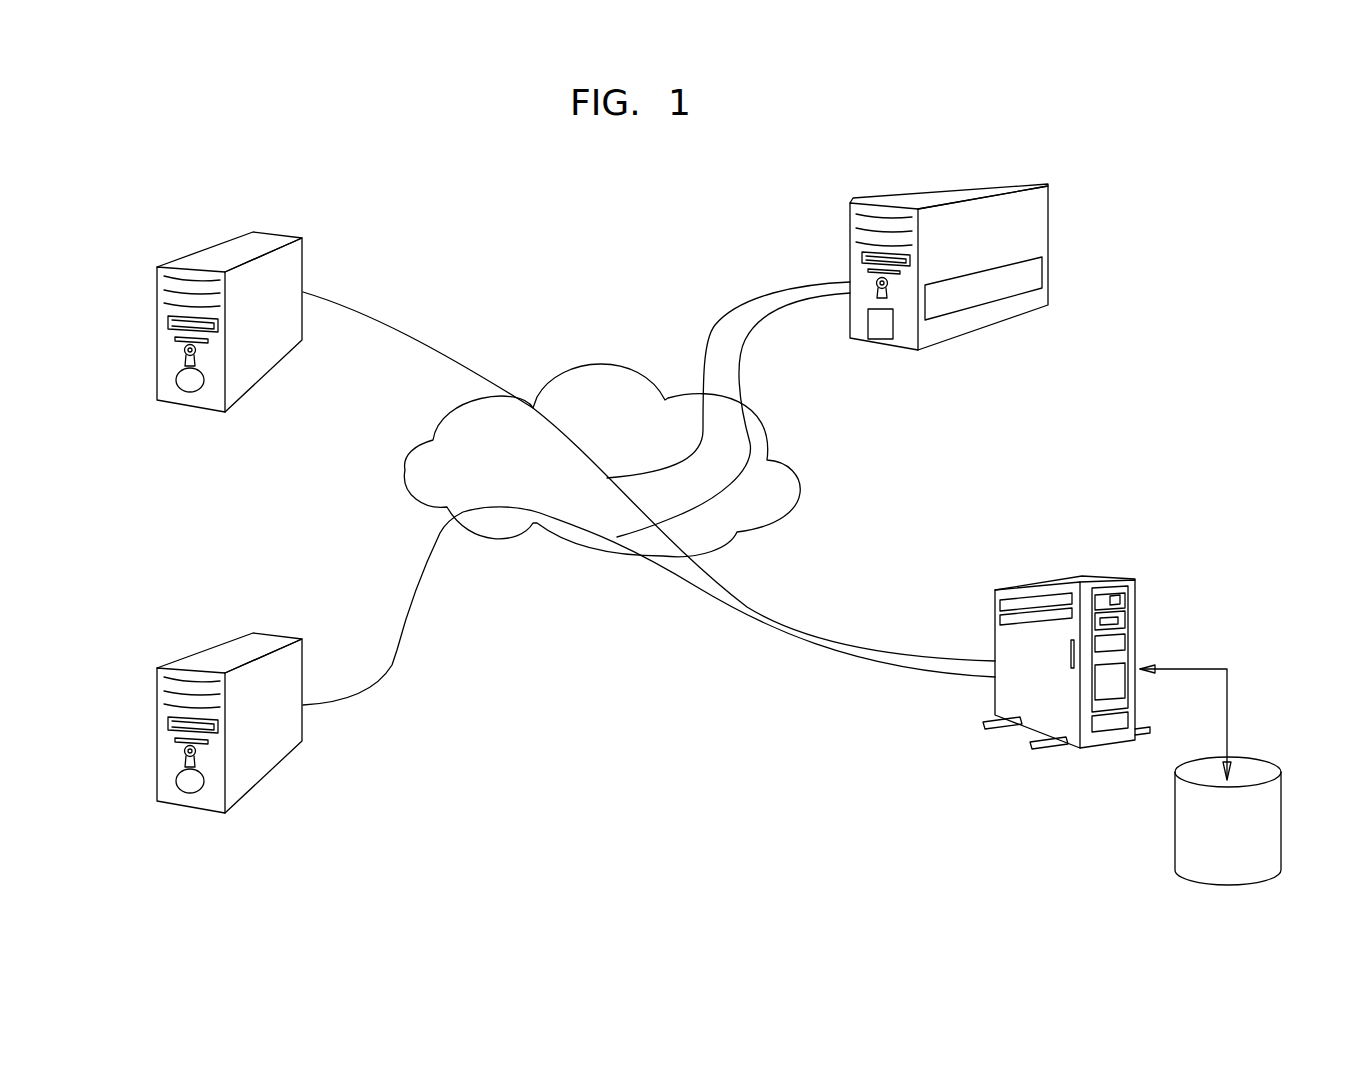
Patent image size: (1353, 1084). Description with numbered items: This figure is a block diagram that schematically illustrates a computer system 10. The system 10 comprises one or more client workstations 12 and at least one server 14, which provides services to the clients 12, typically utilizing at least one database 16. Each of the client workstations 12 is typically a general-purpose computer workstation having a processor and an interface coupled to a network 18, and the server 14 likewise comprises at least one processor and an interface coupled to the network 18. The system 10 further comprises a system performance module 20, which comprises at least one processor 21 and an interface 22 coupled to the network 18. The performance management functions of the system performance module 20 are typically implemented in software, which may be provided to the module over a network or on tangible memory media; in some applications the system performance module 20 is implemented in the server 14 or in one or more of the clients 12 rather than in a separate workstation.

The computer system 10 is at (557, 315).
The client workstation 12 is at (203, 247).
The server 14 is at (1137, 612).
The database 16 is at (1175, 805).
The network 18 is at (805, 490).
The system performance module 20 is at (959, 247).
The processor 21 is at (1047, 268).
The interface 22 is at (868, 320).